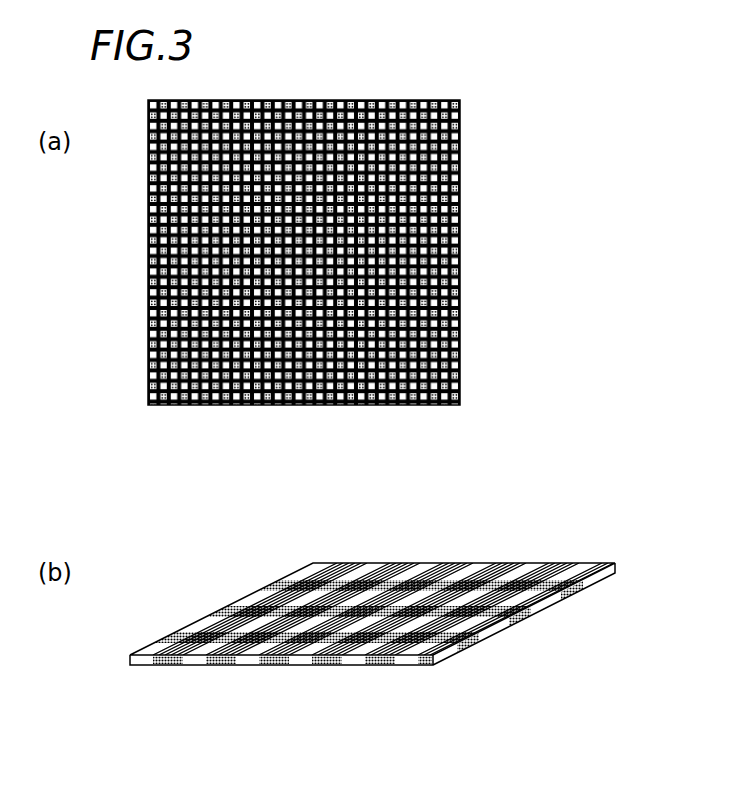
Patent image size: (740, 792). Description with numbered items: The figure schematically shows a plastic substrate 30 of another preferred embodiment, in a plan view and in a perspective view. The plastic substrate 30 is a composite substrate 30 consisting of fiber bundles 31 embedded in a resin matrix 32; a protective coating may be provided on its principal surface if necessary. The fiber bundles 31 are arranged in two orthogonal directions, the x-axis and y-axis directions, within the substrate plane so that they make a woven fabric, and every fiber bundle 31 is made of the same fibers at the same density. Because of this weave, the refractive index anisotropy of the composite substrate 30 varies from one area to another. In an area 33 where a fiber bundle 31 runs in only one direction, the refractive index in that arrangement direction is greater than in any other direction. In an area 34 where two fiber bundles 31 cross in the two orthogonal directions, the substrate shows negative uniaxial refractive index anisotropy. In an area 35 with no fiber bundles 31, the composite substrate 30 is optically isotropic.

The plastic substrate 30 is at (513, 119).
The fiber bundles 31 is at (556, 638).
The resin matrix 32 is at (597, 570).
The area where the fiber bundle is arranged in one direction 33 is at (400, 613).
The area where two fiber bundles are arranged in two orthogonal directions 34 is at (246, 628).
The area with no fiber bundles 35 is at (407, 590).